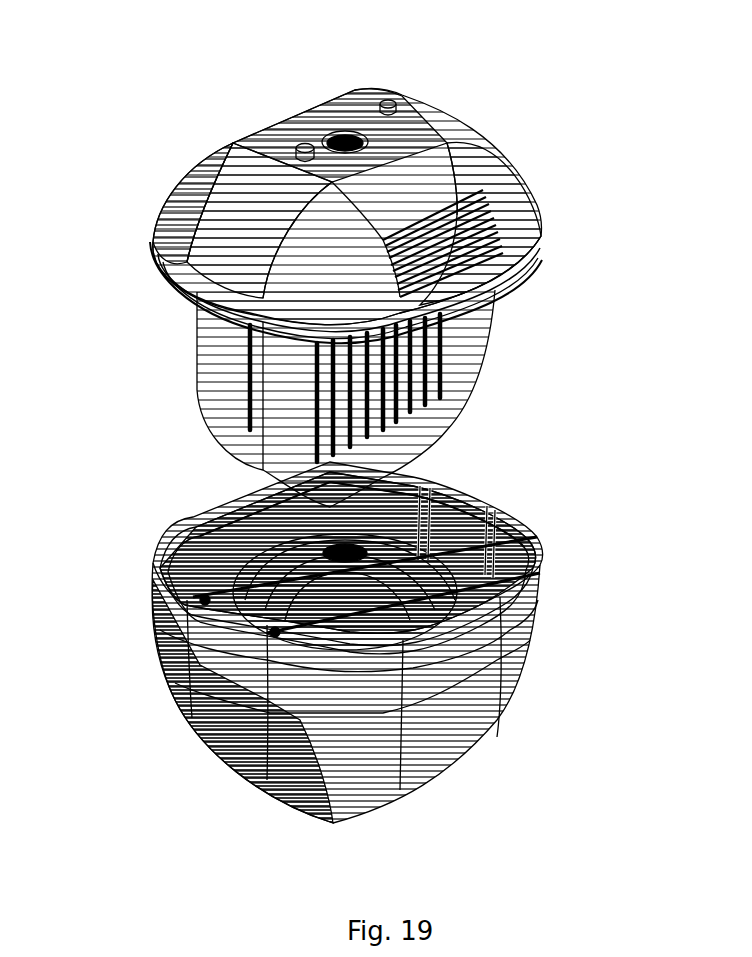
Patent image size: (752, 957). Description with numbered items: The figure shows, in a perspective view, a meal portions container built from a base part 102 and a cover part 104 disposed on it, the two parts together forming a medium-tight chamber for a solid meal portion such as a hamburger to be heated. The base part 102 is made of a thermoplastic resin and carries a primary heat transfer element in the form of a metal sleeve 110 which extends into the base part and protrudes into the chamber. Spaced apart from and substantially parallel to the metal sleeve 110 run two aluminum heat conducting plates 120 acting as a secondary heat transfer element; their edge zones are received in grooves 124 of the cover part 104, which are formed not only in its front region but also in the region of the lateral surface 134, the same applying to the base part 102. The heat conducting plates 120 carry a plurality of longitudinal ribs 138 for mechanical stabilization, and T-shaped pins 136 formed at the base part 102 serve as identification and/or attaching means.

The base part 102 is at (156, 131).
The cover part 104 is at (155, 767).
The metal sleeve 110 is at (345, 137).
The heat conducting plates 120 is at (210, 377).
The grooves 124 is at (497, 555).
The lateral surface 134 is at (195, 648).
The T-shaped pins 136 is at (398, 108).
The longitudinal ribs 138 is at (298, 148).